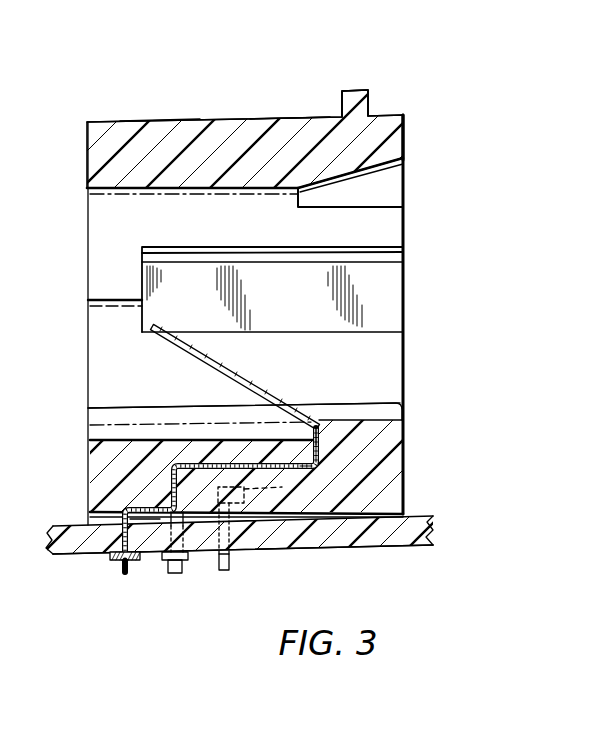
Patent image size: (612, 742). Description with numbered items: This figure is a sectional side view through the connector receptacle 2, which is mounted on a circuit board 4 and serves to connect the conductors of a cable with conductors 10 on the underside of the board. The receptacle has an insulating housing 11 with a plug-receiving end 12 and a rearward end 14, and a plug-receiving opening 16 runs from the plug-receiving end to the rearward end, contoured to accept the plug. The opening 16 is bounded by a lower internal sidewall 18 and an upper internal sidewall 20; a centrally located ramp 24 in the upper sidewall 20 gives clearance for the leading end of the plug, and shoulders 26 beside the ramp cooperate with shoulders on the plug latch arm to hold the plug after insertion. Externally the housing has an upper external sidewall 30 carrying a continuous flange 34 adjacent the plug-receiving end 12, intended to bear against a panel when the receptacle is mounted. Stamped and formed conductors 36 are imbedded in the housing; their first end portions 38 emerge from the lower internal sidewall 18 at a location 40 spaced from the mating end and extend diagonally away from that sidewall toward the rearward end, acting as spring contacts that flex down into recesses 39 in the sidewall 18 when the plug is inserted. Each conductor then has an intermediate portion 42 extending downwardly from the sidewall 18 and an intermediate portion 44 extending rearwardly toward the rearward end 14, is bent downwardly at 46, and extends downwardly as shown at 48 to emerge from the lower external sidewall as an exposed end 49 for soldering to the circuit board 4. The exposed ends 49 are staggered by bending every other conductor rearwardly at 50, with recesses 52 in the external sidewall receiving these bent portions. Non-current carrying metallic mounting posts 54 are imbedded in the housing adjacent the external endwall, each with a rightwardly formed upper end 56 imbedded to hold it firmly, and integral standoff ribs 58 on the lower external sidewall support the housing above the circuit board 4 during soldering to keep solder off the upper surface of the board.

The connector receptacle 2 is at (220, 80).
The circuit board 4 is at (52, 557).
The conductors on the underside of the circuit board 10 is at (120, 562).
The insulating housing 11 is at (170, 118).
The plug-receiving end 12 is at (402, 120).
The rearward end 14 is at (87, 148).
The plug-receiving opening 16 is at (366, 298).
The lower internal sidewall 18 is at (165, 427).
The upper internal sidewall 20 is at (187, 190).
The ramp 24 is at (402, 166).
The shoulders 26 is at (298, 198).
The upper external sidewall 30 is at (275, 118).
The flange 34 is at (353, 90).
The conductors 36 is at (320, 469).
The first end portions 38 is at (250, 363).
The recesses 39 is at (118, 437).
The emergence location 40 is at (322, 425).
The downwardly extending intermediate portion 42 is at (319, 447).
The rearwardly extending intermediate portion 44 is at (227, 430).
The downward bend 46 is at (172, 472).
The downwardly extending portion 48 is at (170, 488).
The exposed ends 49 is at (177, 573).
The rearwardly bent portion 50 is at (148, 517).
The recesses in external sidewall 52 is at (100, 549).
The mounting posts 54 is at (223, 571).
The upper end of mounting post 56 is at (278, 510).
The standoff ribs 58 is at (298, 517).